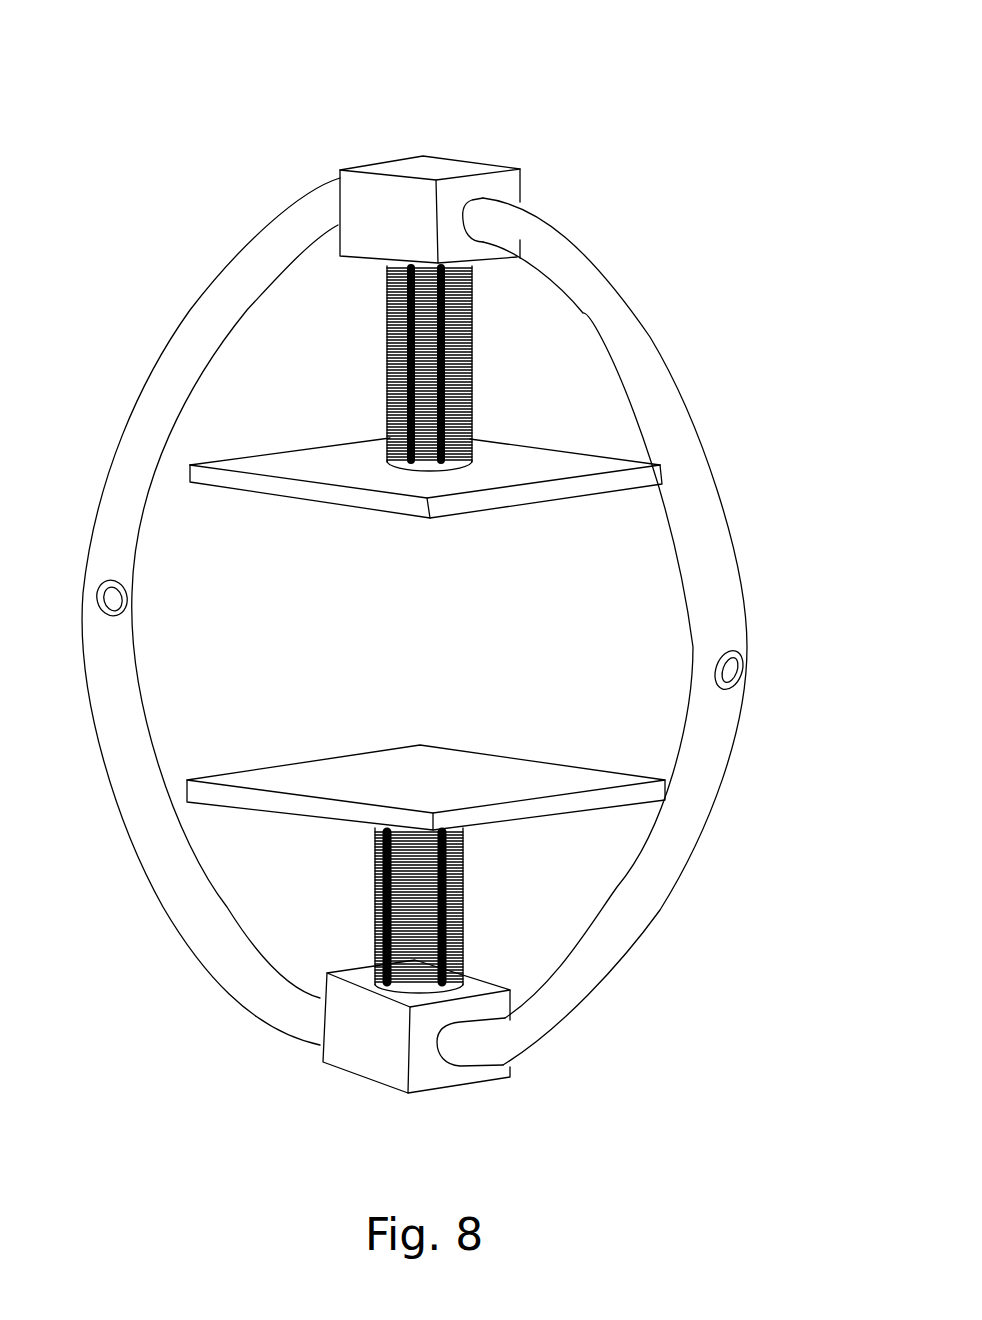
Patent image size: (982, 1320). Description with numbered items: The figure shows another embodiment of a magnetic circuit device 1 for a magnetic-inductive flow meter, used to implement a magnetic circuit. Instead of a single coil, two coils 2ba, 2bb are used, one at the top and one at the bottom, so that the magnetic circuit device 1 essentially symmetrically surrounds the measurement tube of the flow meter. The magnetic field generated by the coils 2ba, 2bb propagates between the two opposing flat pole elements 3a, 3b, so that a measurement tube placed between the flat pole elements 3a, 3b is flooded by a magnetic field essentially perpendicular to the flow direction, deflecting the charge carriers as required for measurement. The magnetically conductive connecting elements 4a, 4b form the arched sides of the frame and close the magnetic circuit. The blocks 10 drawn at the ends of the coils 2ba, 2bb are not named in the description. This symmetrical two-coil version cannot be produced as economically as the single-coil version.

The magnetic circuit device 1 is at (656, 171).
The end block 10 is at (438, 168).
The magnetically conductive connecting element 4a is at (155, 407).
The magnetically conductive connecting element 4b is at (703, 507).
The flat pole element 3a is at (527, 495).
The flat pole element 3b is at (453, 768).
The coil 2ba is at (472, 380).
The coil 2bb is at (467, 897).